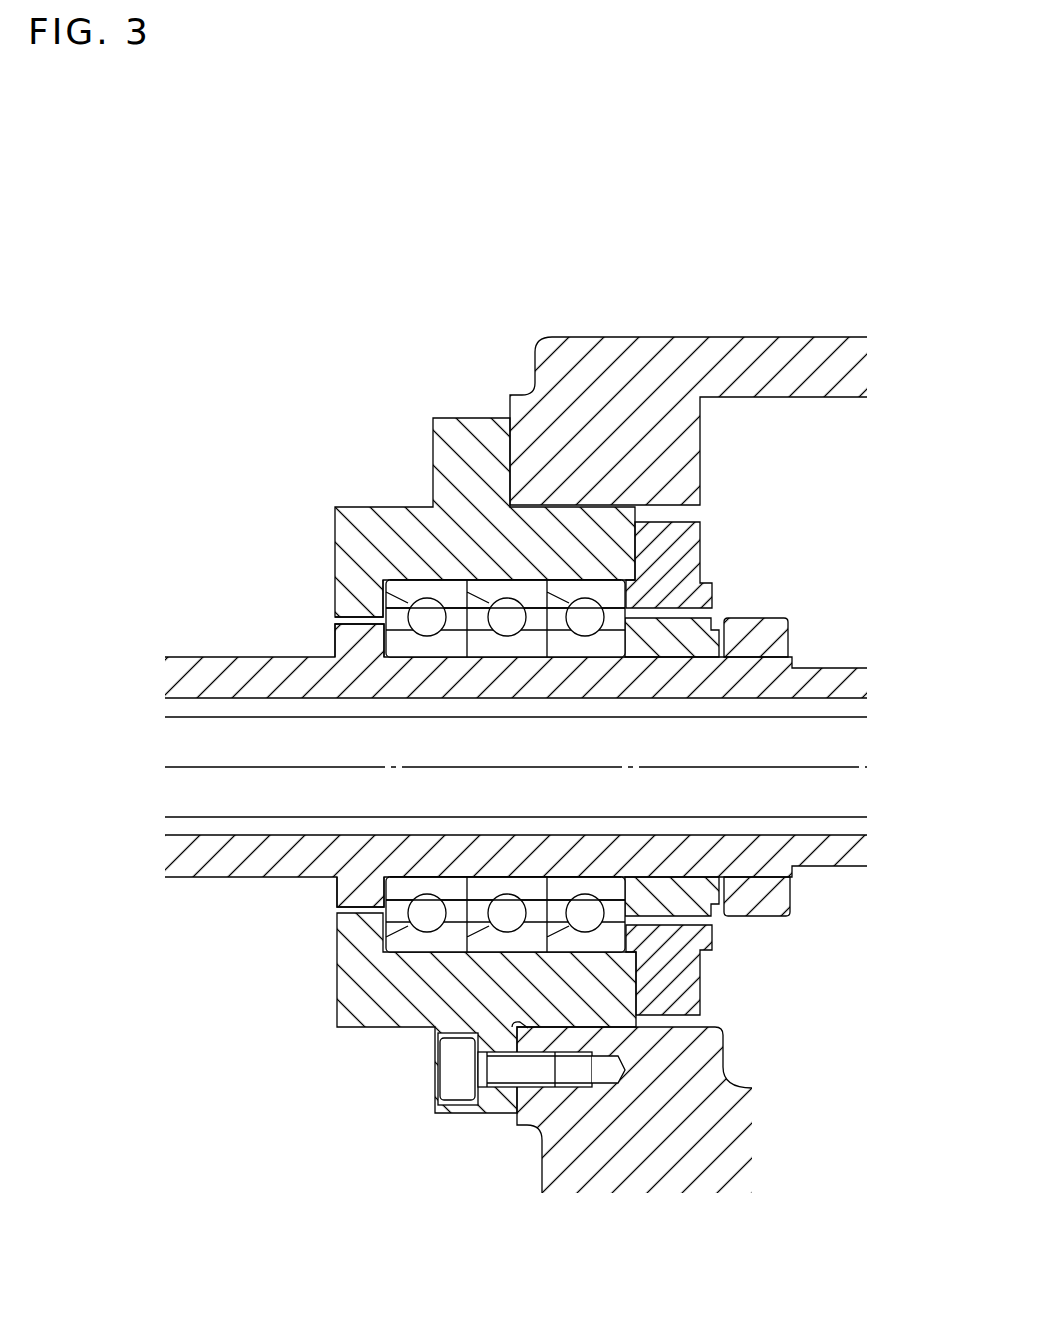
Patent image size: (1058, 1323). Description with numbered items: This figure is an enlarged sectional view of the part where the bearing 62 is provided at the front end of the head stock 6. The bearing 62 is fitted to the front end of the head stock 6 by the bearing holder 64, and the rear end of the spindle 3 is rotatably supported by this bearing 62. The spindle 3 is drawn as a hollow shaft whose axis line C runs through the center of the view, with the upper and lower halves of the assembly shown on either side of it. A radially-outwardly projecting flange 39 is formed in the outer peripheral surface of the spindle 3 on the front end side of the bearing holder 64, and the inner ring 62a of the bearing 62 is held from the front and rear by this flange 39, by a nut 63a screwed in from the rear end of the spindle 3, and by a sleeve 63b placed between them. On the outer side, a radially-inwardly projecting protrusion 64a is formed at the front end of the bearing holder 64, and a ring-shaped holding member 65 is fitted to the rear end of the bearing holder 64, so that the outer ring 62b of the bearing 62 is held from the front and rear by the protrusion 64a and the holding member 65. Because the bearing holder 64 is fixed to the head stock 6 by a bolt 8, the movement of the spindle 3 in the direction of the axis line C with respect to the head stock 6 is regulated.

The spindle 3 is at (221, 648).
The head stock 6 is at (808, 332).
The bolt 8 is at (573, 1077).
The flange 39 is at (352, 887).
The bearing 62 is at (560, 573).
The inner ring 62a is at (450, 890).
The outer ring 62b is at (455, 590).
The nut 63a is at (773, 907).
The sleeve 63b is at (672, 902).
The bearing holder 64 is at (362, 505).
The protrusion 64a is at (347, 607).
The holding member 65 is at (677, 553).
The axis line C is at (738, 767).